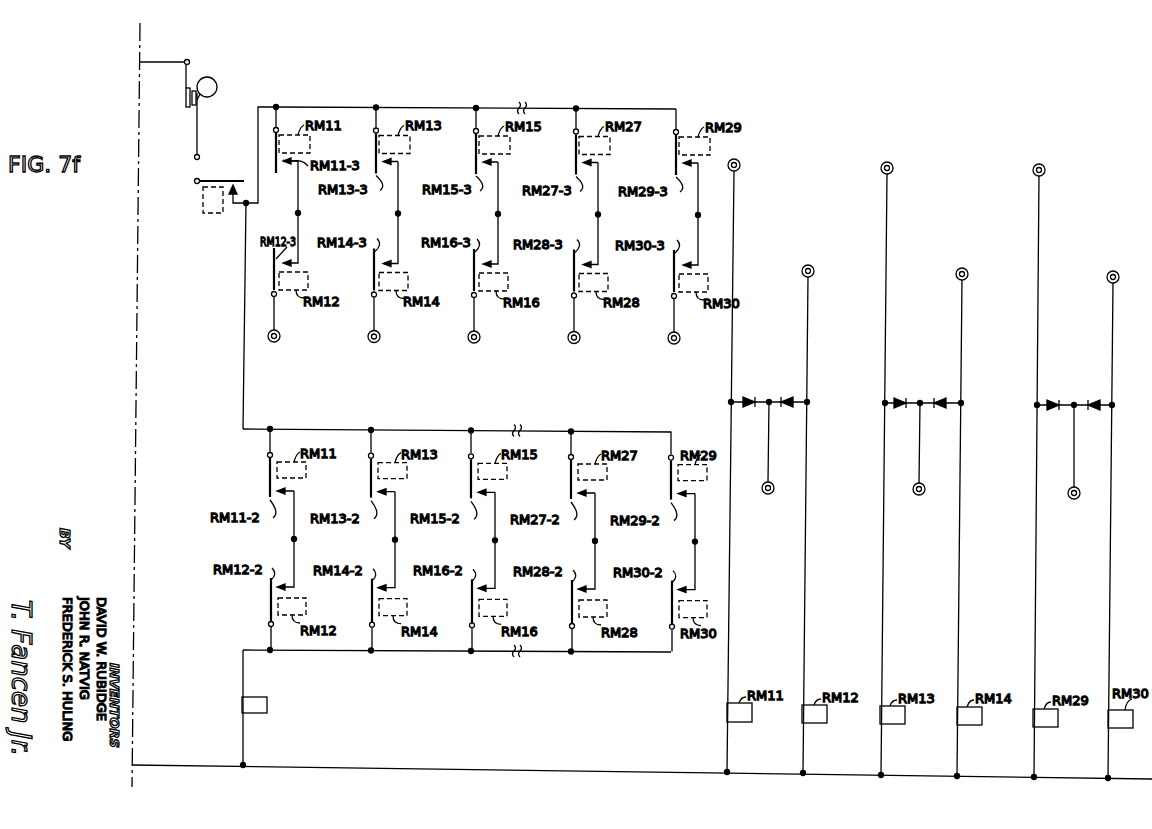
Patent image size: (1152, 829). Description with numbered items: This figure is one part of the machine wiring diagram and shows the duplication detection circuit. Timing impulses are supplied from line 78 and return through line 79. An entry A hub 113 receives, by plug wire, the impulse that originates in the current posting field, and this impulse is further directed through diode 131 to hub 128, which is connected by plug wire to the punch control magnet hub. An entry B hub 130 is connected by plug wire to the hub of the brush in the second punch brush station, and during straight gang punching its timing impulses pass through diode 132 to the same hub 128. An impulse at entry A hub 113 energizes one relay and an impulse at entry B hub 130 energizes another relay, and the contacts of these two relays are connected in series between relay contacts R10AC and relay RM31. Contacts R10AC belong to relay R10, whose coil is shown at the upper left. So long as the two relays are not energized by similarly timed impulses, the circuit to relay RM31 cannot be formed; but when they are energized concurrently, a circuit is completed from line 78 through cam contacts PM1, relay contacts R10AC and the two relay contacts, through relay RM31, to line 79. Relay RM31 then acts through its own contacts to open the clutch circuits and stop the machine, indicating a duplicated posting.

The line 78 is at (171, 62).
The line 79 is at (448, 767).
The entry A hub 113 is at (891, 171).
The hub 128 is at (919, 495).
The entry B hub 130 is at (966, 277).
The diode 131 is at (906, 399).
The diode 132 is at (935, 409).
The cam contacts PM1 is at (189, 112).
The relay R10 is at (203, 196).
The relay contacts R10AC is at (246, 168).
The relay RM31 is at (257, 697).